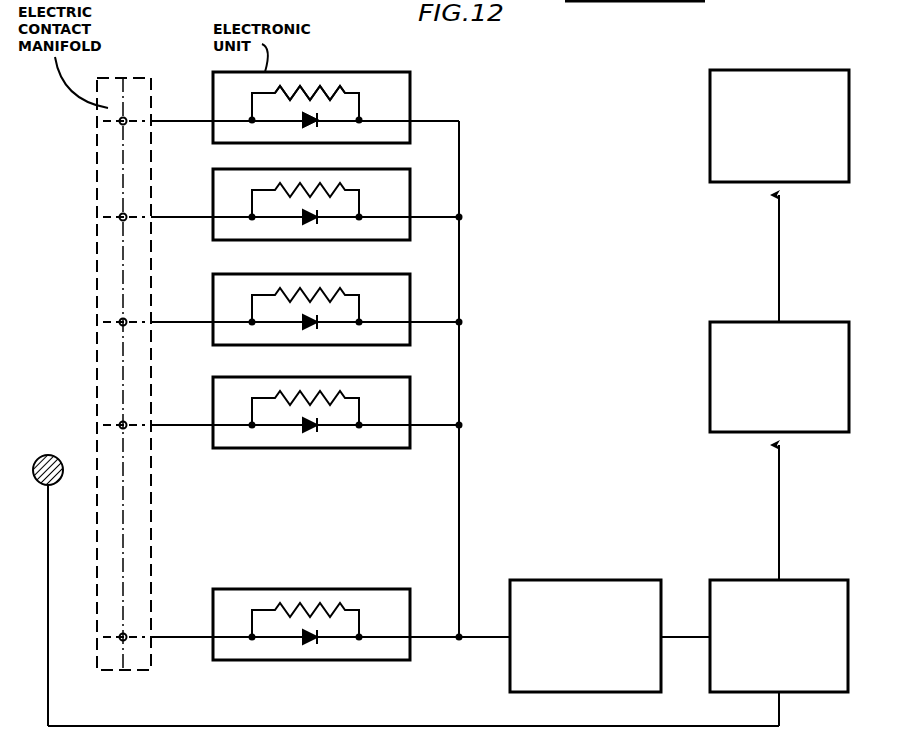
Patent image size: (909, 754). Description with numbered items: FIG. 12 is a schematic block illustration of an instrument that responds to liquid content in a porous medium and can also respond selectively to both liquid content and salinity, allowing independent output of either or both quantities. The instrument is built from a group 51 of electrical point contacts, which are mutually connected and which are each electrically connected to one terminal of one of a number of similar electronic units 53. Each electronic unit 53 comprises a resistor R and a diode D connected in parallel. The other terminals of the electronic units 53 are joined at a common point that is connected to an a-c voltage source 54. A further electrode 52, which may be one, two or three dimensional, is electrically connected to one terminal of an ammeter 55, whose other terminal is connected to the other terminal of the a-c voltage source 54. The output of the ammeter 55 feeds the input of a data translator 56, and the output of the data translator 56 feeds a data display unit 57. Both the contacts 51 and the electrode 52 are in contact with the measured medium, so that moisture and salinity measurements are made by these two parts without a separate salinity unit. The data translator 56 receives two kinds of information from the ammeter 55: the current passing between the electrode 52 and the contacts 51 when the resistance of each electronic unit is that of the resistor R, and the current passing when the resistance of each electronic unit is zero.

The group of electrical point contacts 51 is at (118, 78).
The common electrode 52 is at (40, 456).
The electronic unit 53 is at (322, 75).
The resistor R is at (335, 92).
The diode D is at (388, 118).
The a-c voltage source 54 is at (602, 580).
The ammeter 55 is at (795, 580).
The data translator 56 is at (796, 322).
The data display unit 57 is at (788, 70).